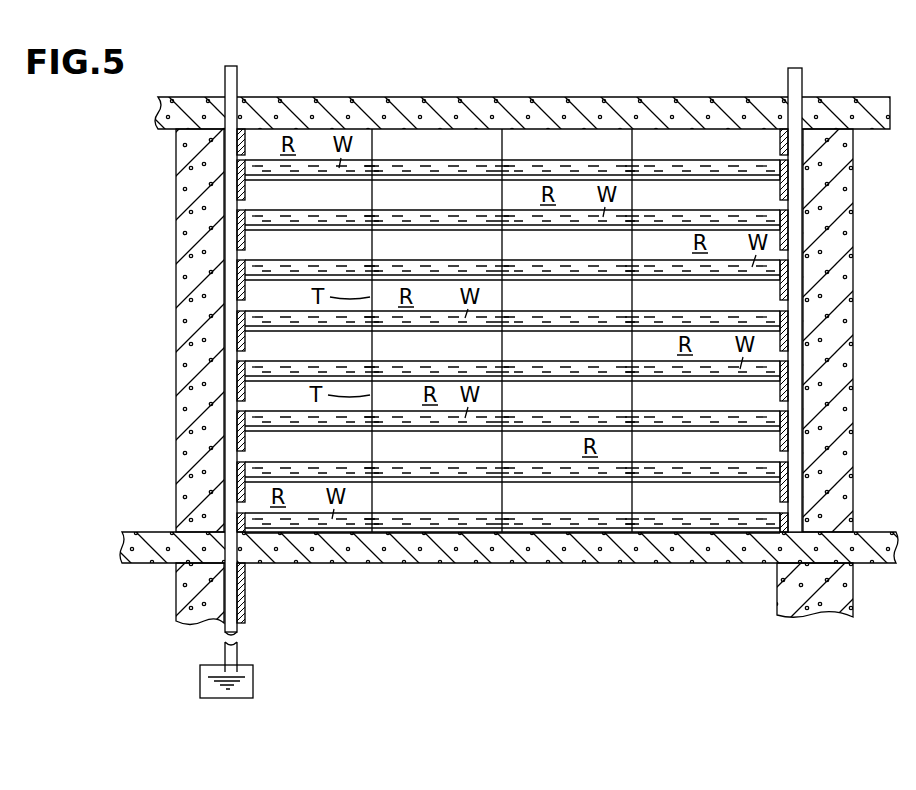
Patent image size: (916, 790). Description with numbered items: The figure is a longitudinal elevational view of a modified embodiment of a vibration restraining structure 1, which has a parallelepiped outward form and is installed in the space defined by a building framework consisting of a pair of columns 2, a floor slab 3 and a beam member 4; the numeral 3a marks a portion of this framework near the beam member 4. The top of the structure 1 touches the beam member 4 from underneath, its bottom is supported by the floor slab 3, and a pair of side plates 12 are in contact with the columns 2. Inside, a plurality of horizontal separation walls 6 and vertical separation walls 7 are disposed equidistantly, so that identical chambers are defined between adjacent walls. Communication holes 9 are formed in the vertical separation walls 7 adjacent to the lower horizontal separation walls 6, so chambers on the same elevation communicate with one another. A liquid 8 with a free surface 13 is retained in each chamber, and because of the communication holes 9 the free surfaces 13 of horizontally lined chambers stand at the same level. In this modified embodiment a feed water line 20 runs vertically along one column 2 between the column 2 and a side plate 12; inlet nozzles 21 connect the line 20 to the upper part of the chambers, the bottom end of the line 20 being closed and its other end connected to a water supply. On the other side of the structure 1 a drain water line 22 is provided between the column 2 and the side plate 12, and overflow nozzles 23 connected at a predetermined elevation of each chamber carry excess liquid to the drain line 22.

The vibration restraining structure 1 is at (610, 92).
The column 2 is at (180, 263).
The floor slab 3 is at (871, 545).
The upper slab portion 3a is at (822, 90).
The beam member 4 is at (675, 104).
The horizontal separation wall 6 is at (730, 178).
The vertical separation wall 7 is at (503, 148).
The water layer 8 is at (564, 162).
The communication hole 9 is at (374, 166).
The side plate 12 is at (791, 140).
The free surface 13 is at (450, 150).
The feed water line 20 is at (788, 80).
The inlet nozzle 21 is at (788, 177).
The drain water line 22 is at (238, 77).
The overflow nozzle 23 is at (237, 163).